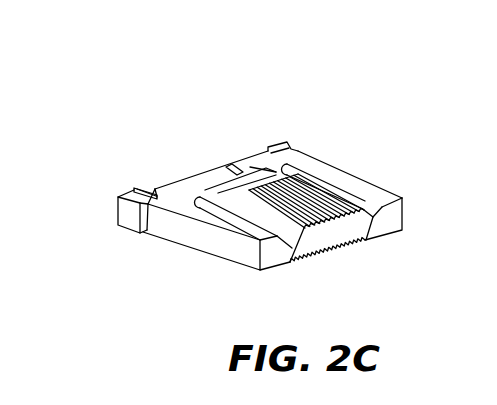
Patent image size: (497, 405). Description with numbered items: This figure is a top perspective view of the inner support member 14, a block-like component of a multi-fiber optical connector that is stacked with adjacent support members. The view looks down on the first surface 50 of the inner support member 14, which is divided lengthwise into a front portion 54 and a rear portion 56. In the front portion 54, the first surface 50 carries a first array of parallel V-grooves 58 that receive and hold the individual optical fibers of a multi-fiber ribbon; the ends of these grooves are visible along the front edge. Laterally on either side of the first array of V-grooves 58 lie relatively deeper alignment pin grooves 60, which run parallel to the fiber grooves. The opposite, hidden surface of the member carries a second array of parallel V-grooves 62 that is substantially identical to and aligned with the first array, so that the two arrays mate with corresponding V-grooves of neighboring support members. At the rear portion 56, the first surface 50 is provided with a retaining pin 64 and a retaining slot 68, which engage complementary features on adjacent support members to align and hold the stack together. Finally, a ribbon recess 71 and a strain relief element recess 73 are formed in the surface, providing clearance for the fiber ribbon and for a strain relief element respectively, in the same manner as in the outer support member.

The inner support member 14 is at (213, 88).
The first surface 50 is at (292, 163).
The front portion 54 is at (405, 180).
The rear portion 56 is at (116, 242).
The first array of parallel V-grooves 58 is at (320, 242).
The alignment pin grooves 60 is at (278, 238).
The second array of parallel V-grooves 62 is at (298, 268).
The retaining pin 64 is at (138, 190).
The retaining slot 68 is at (285, 142).
The ribbon recess 71 is at (206, 172).
The strain relief element recess 73 is at (235, 172).